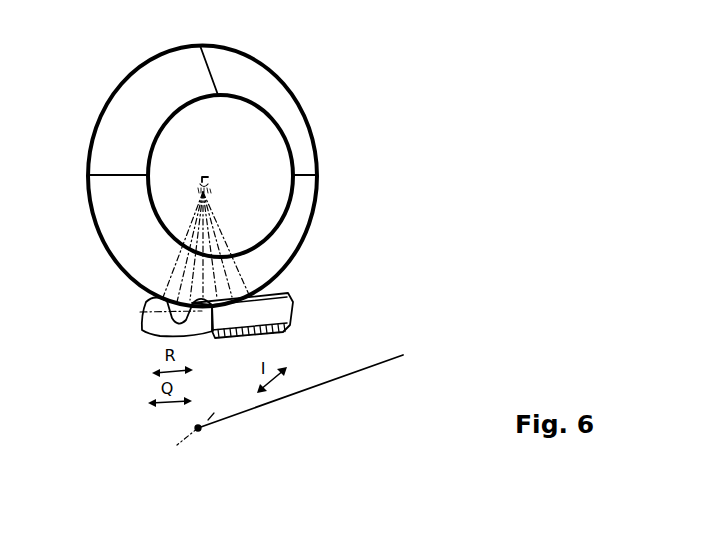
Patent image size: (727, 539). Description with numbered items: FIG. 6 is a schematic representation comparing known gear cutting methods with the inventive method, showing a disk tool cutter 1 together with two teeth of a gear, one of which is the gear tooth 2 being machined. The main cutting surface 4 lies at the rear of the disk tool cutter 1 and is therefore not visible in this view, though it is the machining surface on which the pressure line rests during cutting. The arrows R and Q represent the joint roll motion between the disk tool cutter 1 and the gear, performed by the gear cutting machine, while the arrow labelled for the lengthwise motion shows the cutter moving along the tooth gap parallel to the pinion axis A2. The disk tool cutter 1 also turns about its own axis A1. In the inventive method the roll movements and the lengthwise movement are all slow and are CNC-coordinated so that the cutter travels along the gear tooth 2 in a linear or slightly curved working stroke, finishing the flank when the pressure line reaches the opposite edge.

The disk tool cutter 1 is at (292, 128).
The axis of rotation of the tyre A1 is at (218, 175).
The gear tooth 2 is at (293, 308).
The main cutting surface 4 is at (168, 278).
The pinion axis A2 is at (425, 355).